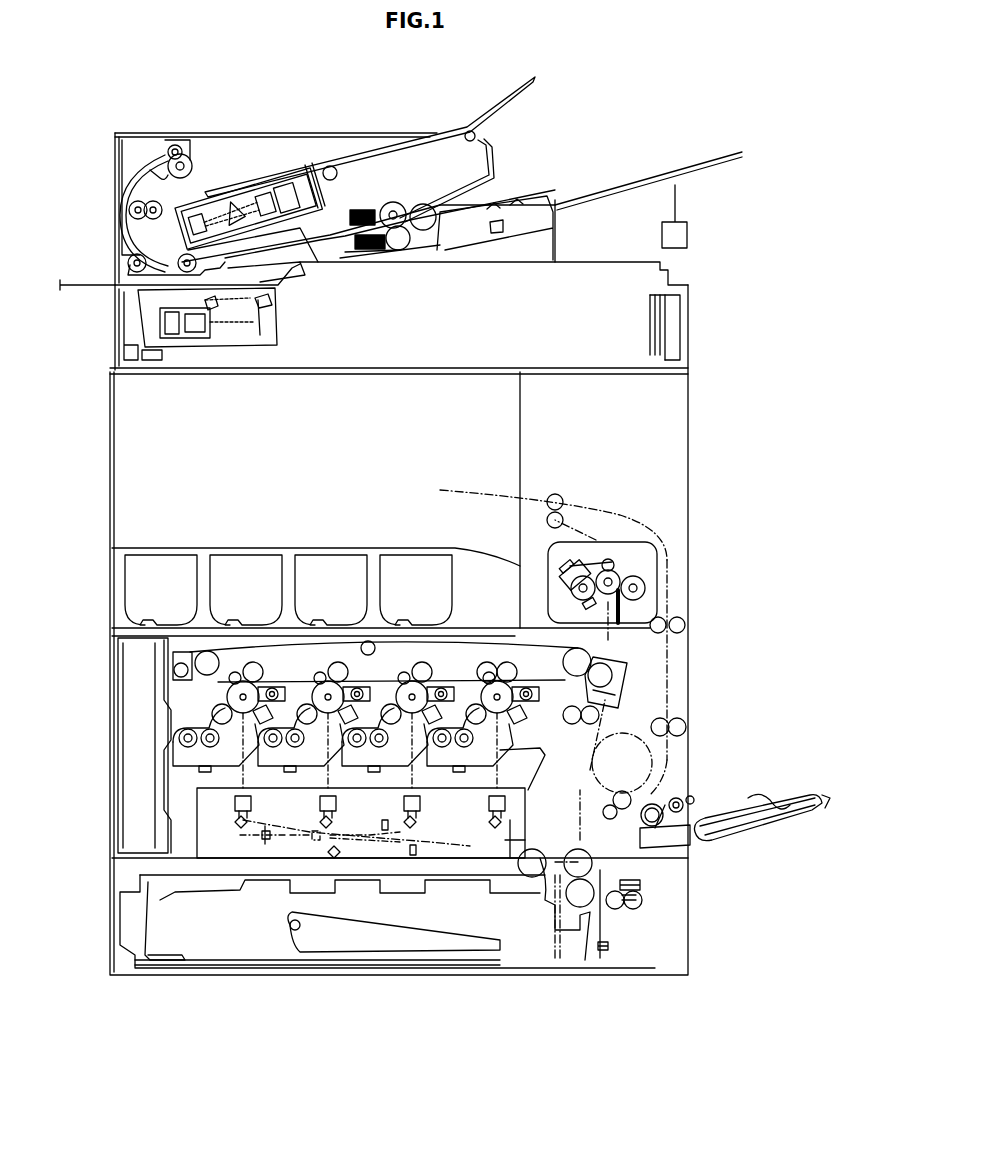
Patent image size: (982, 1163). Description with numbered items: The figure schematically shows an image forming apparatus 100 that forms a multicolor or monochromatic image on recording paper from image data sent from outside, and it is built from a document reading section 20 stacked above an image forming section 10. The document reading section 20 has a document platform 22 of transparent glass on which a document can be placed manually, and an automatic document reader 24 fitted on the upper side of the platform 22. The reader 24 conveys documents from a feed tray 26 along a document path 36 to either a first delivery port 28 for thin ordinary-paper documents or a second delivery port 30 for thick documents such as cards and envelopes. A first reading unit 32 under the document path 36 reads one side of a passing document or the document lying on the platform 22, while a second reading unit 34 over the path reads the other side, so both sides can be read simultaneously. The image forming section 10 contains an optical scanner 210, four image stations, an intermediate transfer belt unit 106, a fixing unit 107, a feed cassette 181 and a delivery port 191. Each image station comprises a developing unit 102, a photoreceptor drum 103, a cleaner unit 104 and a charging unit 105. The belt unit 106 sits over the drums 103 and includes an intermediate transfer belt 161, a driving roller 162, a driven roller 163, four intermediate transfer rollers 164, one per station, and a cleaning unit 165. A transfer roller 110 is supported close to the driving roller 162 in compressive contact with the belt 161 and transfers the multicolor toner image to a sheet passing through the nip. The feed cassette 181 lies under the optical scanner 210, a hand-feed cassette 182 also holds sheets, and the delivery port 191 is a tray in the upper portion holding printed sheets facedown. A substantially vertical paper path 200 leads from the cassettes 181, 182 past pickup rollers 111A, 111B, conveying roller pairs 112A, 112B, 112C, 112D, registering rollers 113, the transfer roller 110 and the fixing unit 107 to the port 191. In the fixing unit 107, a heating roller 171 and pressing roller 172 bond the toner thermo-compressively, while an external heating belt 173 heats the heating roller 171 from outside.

The image forming apparatus 100 is at (696, 93).
The image forming section 10 is at (80, 390).
The document reading section 20 is at (815, 95).
The document platform 22 is at (545, 270).
The automatic document reader 24 is at (115, 134).
The feed tray 26 is at (587, 210).
The first delivery port 28 is at (308, 158).
The second delivery port 30 is at (115, 283).
The first reading unit 32 is at (300, 320).
The second reading unit 34 is at (222, 205).
The document path 36 is at (385, 140).
The developing unit 102 is at (525, 768).
The photoreceptor drum 103 is at (483, 745).
The cleaner unit 104 is at (572, 727).
The charging unit 105 is at (540, 745).
The intermediate transfer belt unit 106 is at (487, 668).
The fixing unit 107 is at (686, 584).
The transfer roller 110 is at (660, 722).
The pickup roller 111A is at (600, 862).
The pickup roller 111B is at (758, 808).
The pair of conveying rollers 112A is at (591, 909).
The pair of conveying rollers 112B is at (590, 505).
The pair of conveying rollers 112C is at (716, 650).
The pair of conveying rollers 112D is at (715, 755).
The pair of registering rollers 113 is at (645, 752).
The intermediate transfer belt 161 is at (517, 668).
The driving roller 162 is at (630, 668).
The driven roller 163 is at (190, 668).
The intermediate transfer roller 164 is at (297, 736).
The cleaning unit 165 is at (185, 682).
The heating roller 171 is at (648, 590).
The pressing roller 172 is at (688, 620).
The external heating belt 173 is at (608, 560).
The feed cassette 181 is at (365, 980).
The hand-feed cassette 182 is at (832, 805).
The delivery port 191 is at (345, 567).
The paper path 200 is at (583, 790).
The optical scanner 210 is at (207, 856).